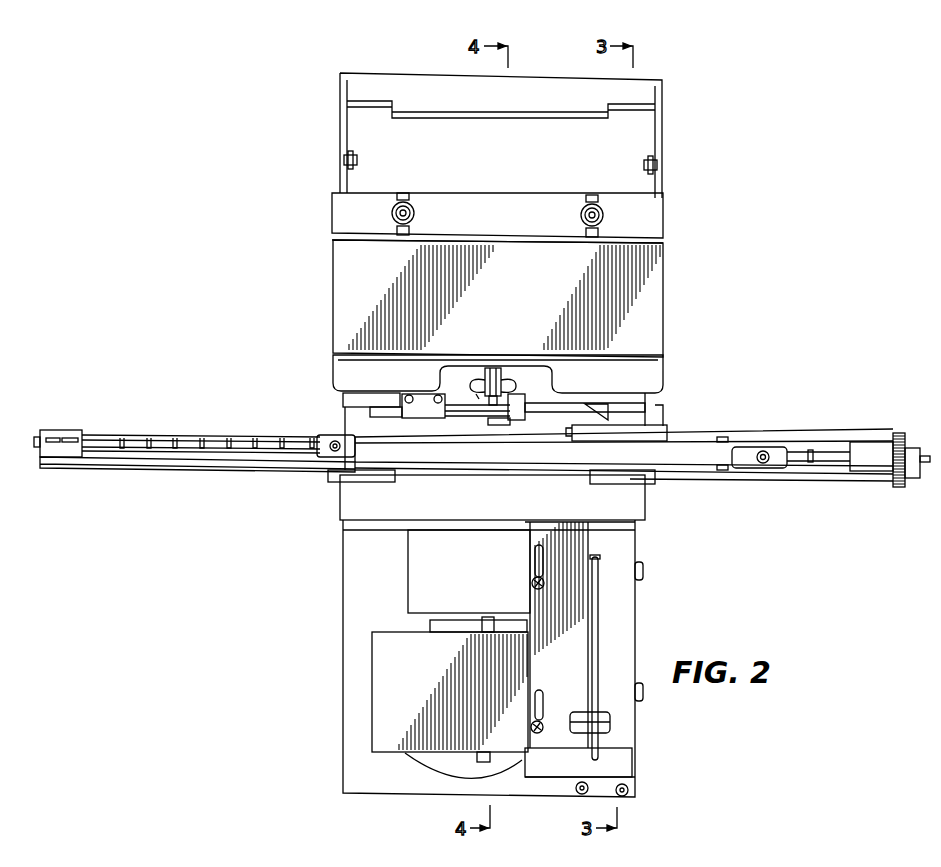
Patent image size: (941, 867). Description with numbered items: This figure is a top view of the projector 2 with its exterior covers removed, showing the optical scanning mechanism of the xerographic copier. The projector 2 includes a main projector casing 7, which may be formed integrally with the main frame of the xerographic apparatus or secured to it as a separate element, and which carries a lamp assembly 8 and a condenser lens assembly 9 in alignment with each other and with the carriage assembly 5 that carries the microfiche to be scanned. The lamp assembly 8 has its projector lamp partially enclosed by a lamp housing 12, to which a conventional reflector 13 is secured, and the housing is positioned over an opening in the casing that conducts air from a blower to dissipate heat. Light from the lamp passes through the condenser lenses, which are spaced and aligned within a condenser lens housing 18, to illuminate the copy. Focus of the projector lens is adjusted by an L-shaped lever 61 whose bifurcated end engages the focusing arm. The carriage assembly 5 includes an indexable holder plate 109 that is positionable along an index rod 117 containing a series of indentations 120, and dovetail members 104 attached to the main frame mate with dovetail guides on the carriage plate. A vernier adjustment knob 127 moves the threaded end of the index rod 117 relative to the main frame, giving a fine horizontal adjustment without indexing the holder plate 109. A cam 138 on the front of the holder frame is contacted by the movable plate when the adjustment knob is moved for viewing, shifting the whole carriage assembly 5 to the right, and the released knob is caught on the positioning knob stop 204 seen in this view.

The projector 2 is at (638, 607).
The carriage assembly 5 is at (177, 428).
The main projector casing 7 is at (342, 568).
The lamp assembly 8 is at (380, 623).
The condenser lens assembly 9 is at (403, 547).
The lamp housing 12 is at (405, 627).
The reflector 13 is at (443, 758).
The condenser lens housing 18 is at (408, 567).
The lever 61 is at (492, 372).
The dovetail members 104 is at (330, 475).
The indexable holder plate 109 is at (450, 445).
The index rod 117 is at (160, 429).
The indentations 120 is at (334, 435).
The knob 127 is at (897, 490).
The cam 138 is at (565, 418).
The positioning knob stop 204 is at (601, 403).